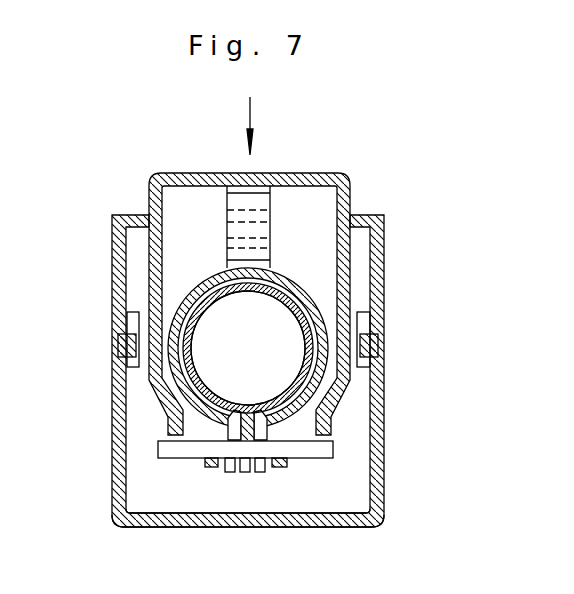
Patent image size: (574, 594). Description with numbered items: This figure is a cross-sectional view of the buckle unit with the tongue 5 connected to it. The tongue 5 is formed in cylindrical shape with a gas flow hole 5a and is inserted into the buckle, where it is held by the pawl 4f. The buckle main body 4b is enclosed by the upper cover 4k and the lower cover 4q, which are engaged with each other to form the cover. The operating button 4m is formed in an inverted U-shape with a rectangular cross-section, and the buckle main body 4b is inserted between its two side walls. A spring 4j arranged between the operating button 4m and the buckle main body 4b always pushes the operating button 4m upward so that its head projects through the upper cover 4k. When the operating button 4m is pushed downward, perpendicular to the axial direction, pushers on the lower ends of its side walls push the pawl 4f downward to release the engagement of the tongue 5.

The spring 4j is at (226, 242).
The operating button 4m is at (349, 182).
The upper cover 4k is at (385, 258).
The buckle main body 4b is at (190, 287).
The tongue 5 is at (313, 310).
The gas flow hole 5a is at (268, 371).
The pawl 4f is at (158, 447).
The lower cover 4q is at (378, 474).